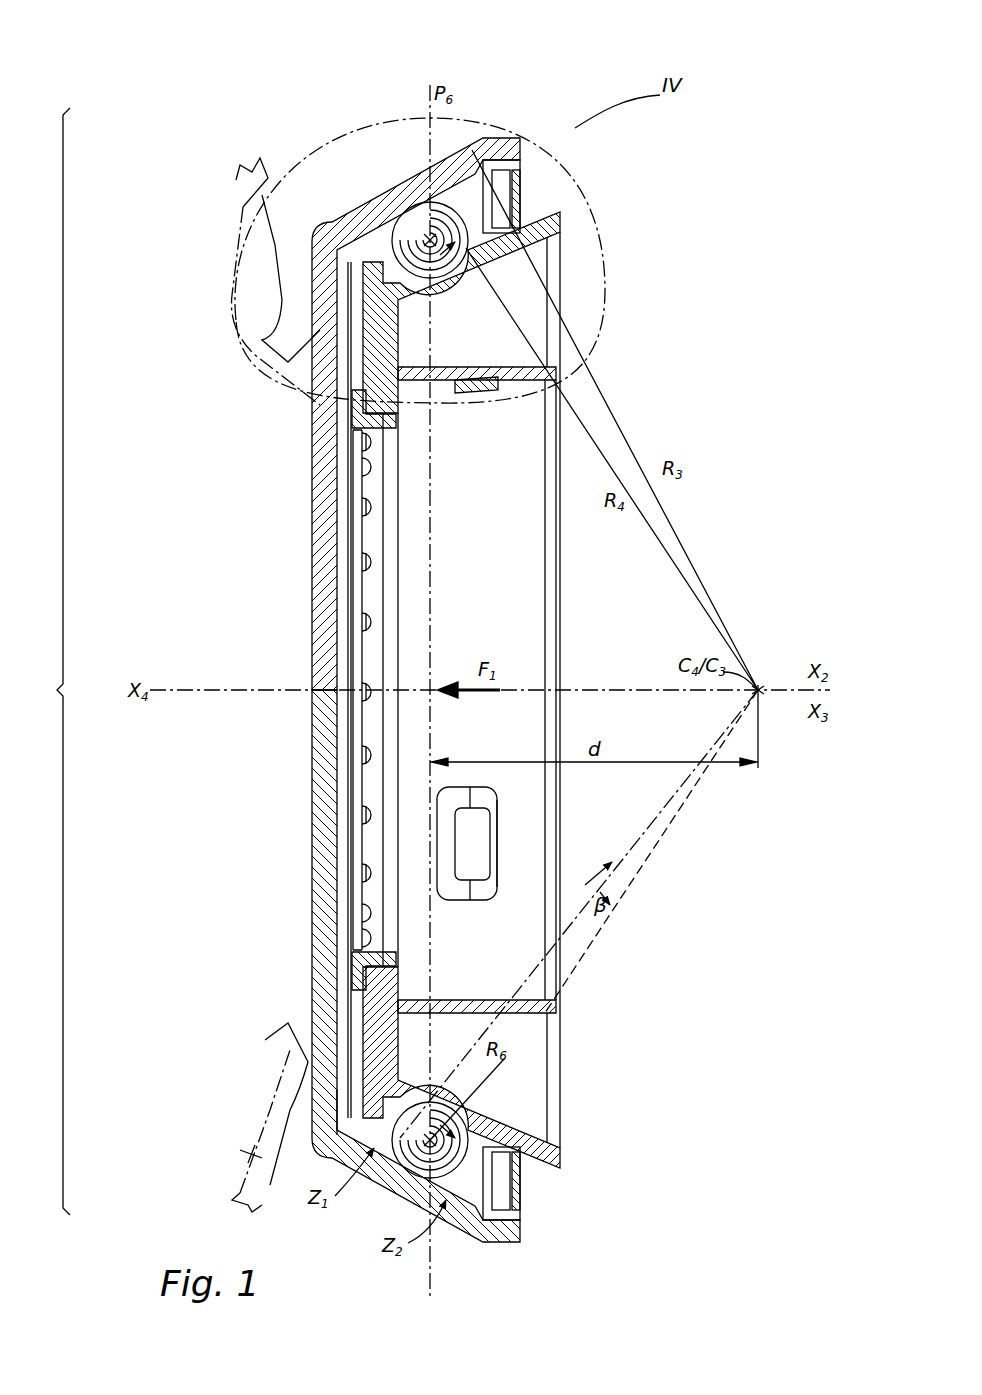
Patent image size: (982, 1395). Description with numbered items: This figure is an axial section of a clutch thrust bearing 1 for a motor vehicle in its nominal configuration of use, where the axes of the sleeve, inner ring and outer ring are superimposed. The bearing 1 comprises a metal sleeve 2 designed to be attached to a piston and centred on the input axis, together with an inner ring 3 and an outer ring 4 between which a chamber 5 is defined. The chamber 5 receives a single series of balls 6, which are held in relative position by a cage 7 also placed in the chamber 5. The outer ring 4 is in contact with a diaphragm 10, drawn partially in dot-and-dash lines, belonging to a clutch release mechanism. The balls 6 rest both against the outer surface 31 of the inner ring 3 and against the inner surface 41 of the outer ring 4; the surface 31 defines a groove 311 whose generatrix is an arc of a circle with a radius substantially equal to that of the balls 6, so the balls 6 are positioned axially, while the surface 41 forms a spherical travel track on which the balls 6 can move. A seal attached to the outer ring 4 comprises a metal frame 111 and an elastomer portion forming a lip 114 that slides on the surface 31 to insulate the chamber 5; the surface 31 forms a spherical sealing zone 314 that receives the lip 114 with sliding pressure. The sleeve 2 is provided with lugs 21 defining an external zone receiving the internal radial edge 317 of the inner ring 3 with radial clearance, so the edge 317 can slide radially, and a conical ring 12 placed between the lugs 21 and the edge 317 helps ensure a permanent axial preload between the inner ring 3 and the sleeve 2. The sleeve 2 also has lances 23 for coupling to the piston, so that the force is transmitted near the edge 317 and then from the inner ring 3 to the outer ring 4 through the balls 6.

The bearing 1 is at (54, 661).
The metal sleeve 2 is at (540, 1008).
The inner ring 3 is at (382, 639).
The outer ring 4 is at (506, 1240).
The chamber 5 is at (476, 1192).
The balls 6 is at (405, 222).
The cage 7 is at (350, 1062).
The diaphragm 10 is at (256, 1152).
The conical ring 12 is at (357, 405).
The lugs 21 is at (257, 690).
The lances 23 is at (470, 392).
The outer surface 31 is at (357, 639).
The inner surface 41 is at (350, 268).
The metal frame 111 is at (588, 194).
The lip 114 is at (520, 210).
The groove 311 is at (421, 639).
The sealing zone 314 is at (462, 170).
The internal radial edge 317 is at (350, 470).